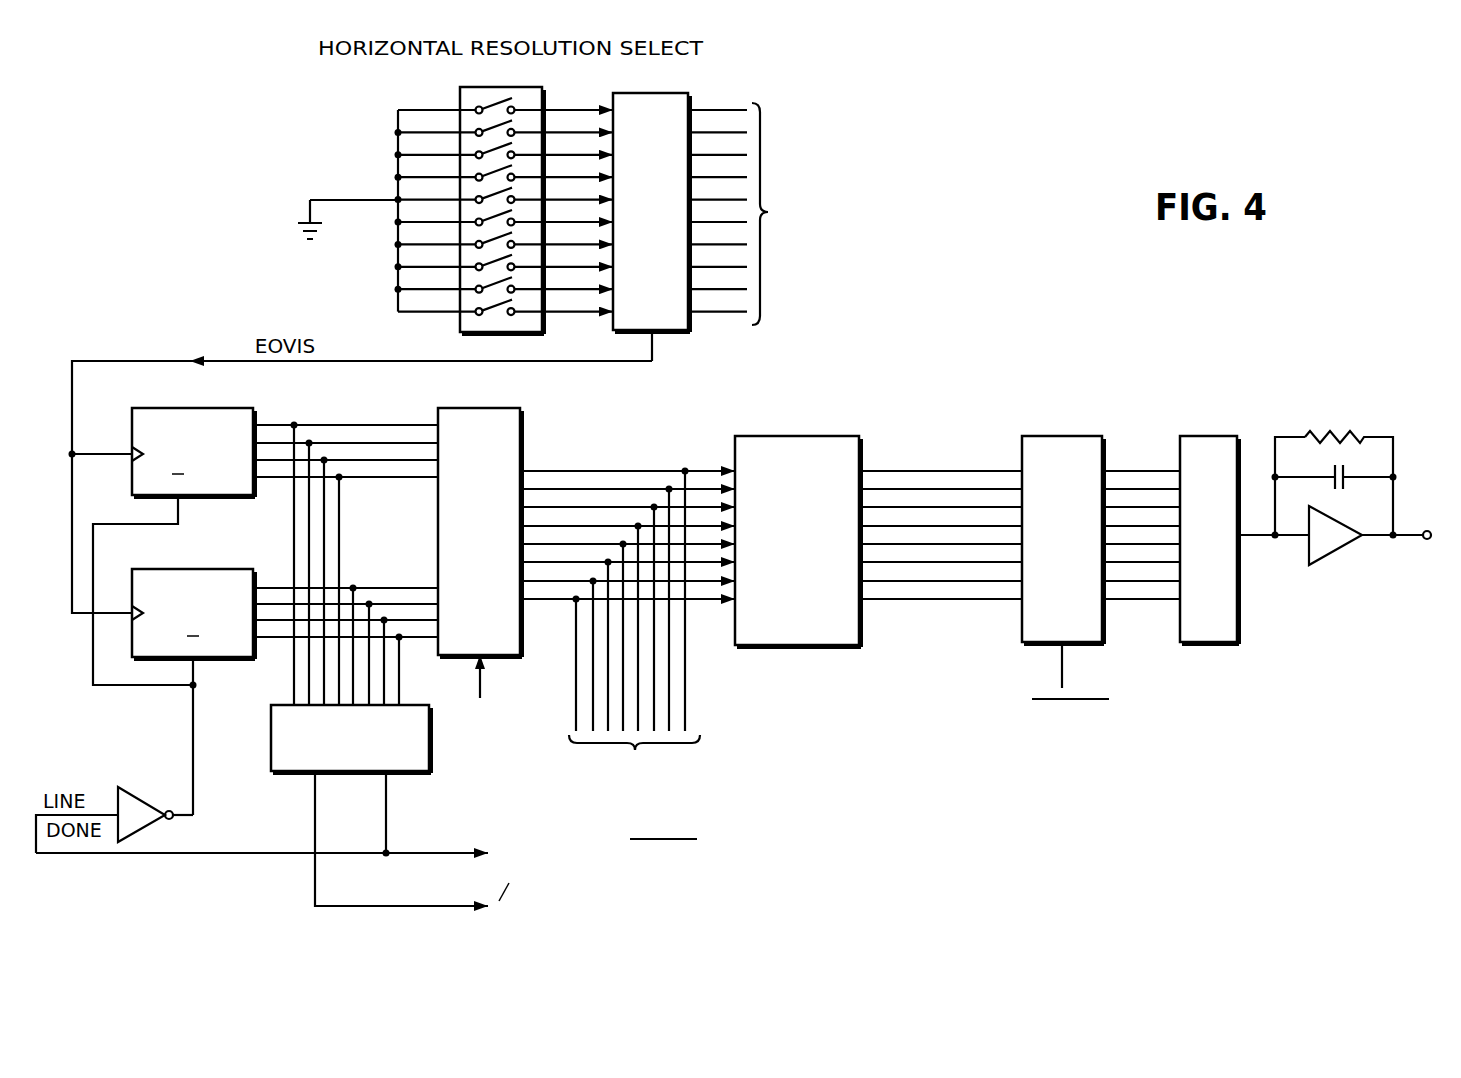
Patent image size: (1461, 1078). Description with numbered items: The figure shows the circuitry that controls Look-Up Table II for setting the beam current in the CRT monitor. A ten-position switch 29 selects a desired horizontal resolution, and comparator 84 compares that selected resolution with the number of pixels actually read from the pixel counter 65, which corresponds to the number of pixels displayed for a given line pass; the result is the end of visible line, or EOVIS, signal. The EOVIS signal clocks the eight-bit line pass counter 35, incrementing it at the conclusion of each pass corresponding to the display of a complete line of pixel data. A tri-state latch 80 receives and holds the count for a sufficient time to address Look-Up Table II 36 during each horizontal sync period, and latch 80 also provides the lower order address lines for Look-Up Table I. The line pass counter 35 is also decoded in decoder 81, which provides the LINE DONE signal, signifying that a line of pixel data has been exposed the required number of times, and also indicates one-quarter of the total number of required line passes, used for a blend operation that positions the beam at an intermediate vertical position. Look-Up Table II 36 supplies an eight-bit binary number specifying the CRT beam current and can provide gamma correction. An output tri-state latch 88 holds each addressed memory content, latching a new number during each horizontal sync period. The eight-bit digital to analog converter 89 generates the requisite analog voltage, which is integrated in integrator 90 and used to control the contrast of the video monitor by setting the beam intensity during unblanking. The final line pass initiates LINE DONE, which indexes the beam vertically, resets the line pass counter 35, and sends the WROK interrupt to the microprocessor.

The 10 position switch 29 is at (460, 100).
The comparator 84 is at (677, 93).
The pixel counter 65 is at (795, 211).
The line pass counter 35 is at (275, 416).
The tri-state latch 80 is at (523, 420).
The decoder 81 is at (289, 773).
The Look-Up Table II 36 is at (820, 647).
The output tri-state latch 88 is at (1061, 435).
The digital to analog converter 89 is at (1207, 435).
The integrator 90 is at (1336, 426).